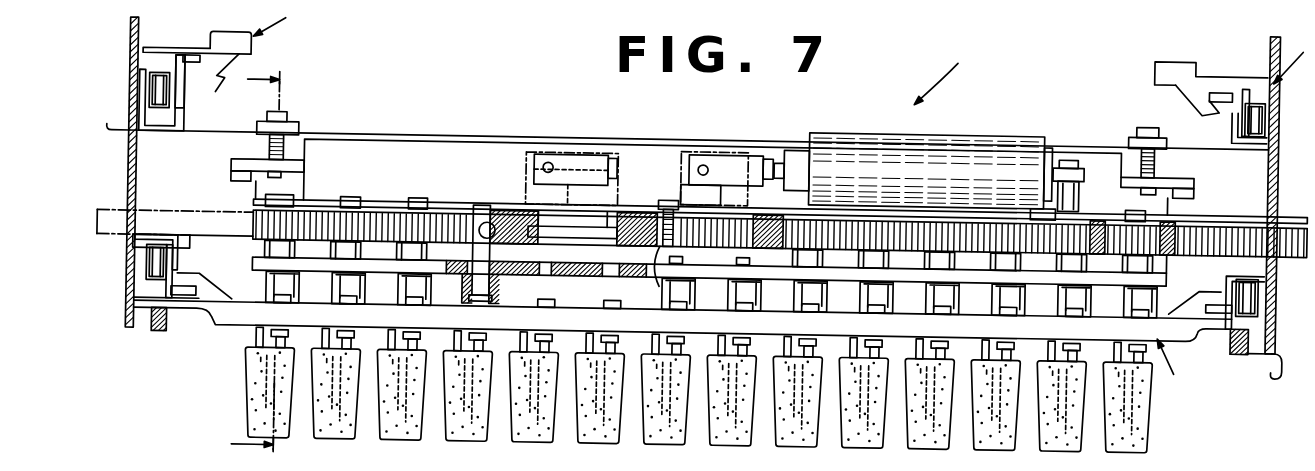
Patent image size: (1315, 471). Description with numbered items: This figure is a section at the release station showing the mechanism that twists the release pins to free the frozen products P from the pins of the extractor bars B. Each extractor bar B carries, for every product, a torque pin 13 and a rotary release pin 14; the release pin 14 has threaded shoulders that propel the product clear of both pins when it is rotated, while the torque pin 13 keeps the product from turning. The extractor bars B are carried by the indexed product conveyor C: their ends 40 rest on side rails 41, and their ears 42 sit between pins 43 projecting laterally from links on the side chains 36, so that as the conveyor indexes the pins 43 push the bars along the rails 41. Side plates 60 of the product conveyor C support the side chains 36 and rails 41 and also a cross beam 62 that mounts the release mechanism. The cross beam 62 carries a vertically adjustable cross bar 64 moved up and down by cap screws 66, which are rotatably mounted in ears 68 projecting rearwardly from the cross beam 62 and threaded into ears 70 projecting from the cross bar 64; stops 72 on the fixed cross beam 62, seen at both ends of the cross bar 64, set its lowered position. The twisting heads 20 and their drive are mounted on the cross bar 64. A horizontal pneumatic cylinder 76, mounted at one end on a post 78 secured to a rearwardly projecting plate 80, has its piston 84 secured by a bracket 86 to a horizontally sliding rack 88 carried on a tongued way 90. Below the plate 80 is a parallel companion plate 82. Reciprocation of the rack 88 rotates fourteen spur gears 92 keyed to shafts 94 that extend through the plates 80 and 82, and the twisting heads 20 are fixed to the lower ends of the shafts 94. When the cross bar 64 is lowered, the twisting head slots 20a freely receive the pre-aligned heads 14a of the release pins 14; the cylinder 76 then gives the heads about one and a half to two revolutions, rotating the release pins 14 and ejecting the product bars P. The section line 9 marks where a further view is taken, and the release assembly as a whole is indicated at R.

The section line 9- 9 is at (255, 264).
The torque pin 13 is at (910, 333).
The rotary release pin 14 is at (686, 336).
The heads of the release pins 14a is at (280, 300).
The twisting heads 20 is at (500, 284).
The twisting head slots 20a is at (412, 300).
The side chains 36 is at (150, 93).
The ends of the extractor bars 40 is at (140, 305).
The side rails 41 is at (160, 335).
The ears of the extractor bars 42 is at (207, 78).
The pins 43 is at (193, 57).
The side plates 60 is at (691, 201).
The cross beam 62 is at (183, 157).
The cross bar 64 is at (382, 183).
The cap screws 66 is at (287, 115).
The ears 68 is at (297, 128).
The ears 70 is at (230, 165).
The stops 72 is at (230, 177).
The pneumatic cylinder 76 is at (940, 171).
The post 78 is at (1063, 155).
The plate 80 is at (306, 211).
The companion plate 82 is at (575, 272).
The piston 84 is at (727, 148).
The bracket 86 is at (686, 146).
The rack 88 is at (113, 205).
The tongued way 90 is at (600, 222).
The spur gears 92 is at (428, 222).
The shafts 94 is at (270, 197).
The extractor bar B is at (684, 203).
The product conveyor C is at (1293, 58).
The frozen products P is at (240, 388).
The rack drive R is at (939, 73).